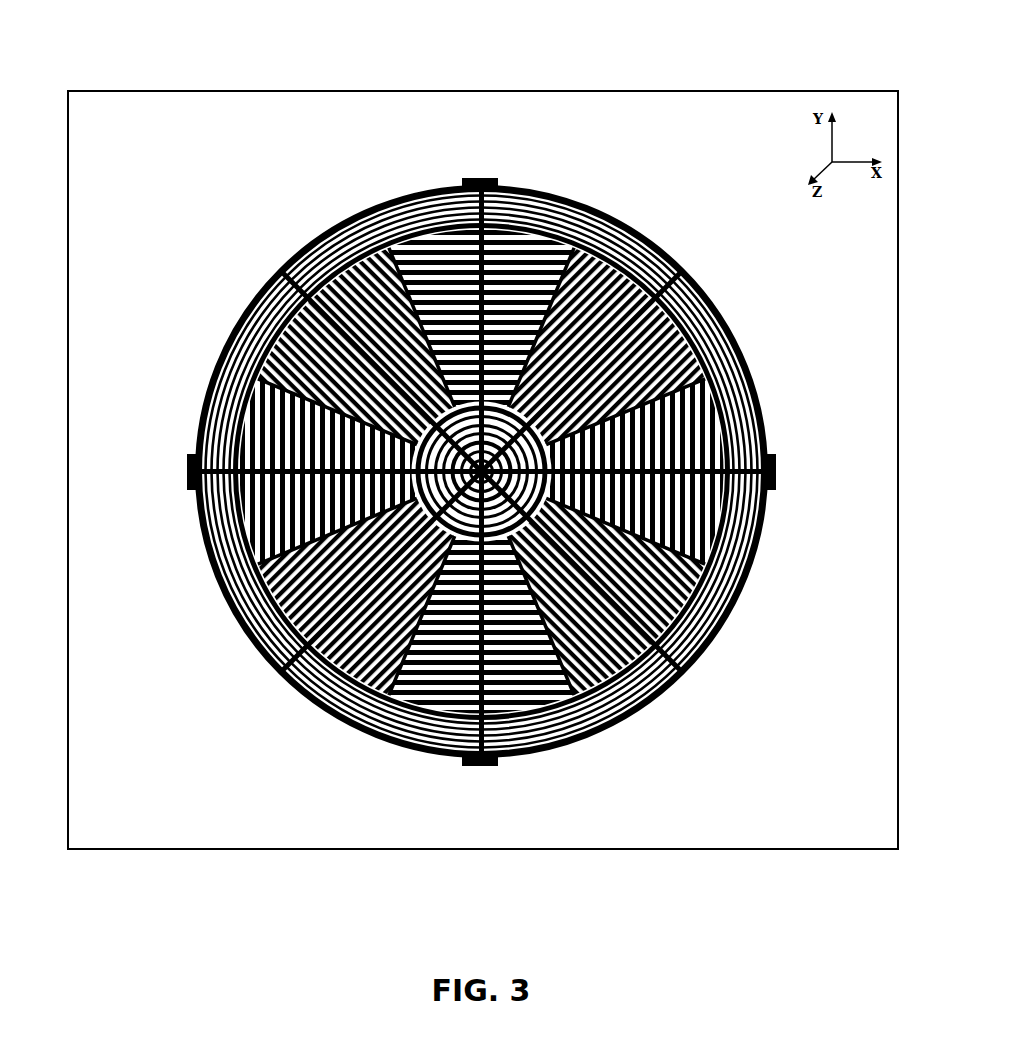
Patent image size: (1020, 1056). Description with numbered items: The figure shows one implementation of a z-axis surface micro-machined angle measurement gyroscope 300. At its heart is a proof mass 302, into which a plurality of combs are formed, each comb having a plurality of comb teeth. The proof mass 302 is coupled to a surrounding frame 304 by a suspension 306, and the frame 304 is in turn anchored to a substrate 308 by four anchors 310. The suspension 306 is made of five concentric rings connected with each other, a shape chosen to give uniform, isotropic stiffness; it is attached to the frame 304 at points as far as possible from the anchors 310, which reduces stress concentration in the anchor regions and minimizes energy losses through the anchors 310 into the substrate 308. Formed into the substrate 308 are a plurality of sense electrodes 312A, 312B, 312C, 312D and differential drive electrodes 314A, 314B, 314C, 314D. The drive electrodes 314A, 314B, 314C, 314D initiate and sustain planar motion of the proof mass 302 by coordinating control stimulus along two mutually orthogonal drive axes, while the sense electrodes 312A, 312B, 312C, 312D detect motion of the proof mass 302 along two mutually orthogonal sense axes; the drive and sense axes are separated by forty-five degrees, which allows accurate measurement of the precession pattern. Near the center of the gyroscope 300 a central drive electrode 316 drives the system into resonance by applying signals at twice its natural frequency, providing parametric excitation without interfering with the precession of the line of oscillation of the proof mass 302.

The z-axis surface micro-machined angle measurement gyroscope 300 is at (519, 35).
The proof mass 302 is at (580, 208).
The frame 304 is at (732, 618).
The suspension 306 is at (593, 740).
The substrate 308 is at (622, 852).
The anchors 310 is at (778, 488).
The sense electrode 312A is at (302, 298).
The sense electrode 312B is at (665, 298).
The sense electrode 312C is at (685, 672).
The sense electrode 312D is at (275, 672).
The differential drive electrode 314A is at (445, 232).
The differential drive electrode 314B is at (738, 462).
The differential drive electrode 314C is at (470, 730).
The differential drive electrode 314D is at (235, 465).
The central drive electrode 316 is at (258, 645).